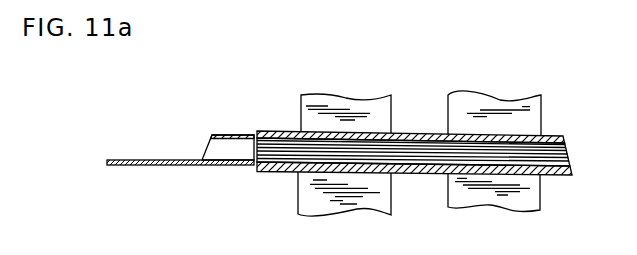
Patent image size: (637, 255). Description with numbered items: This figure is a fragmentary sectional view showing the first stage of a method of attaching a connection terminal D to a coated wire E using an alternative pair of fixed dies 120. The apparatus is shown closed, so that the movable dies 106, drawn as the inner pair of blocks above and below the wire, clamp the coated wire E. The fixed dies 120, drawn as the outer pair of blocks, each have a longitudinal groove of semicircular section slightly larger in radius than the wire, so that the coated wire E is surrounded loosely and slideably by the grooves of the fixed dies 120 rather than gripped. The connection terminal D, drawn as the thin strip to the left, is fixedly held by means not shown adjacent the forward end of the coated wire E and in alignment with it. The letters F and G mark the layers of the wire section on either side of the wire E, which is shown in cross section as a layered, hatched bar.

The fixed die 120 is at (342, 102).
The movable die 106 is at (502, 107).
The connection terminal D is at (183, 155).
The coated wire E is at (574, 145).
The upper cladding layer F is at (546, 137).
The lower cladding layer G is at (571, 162).